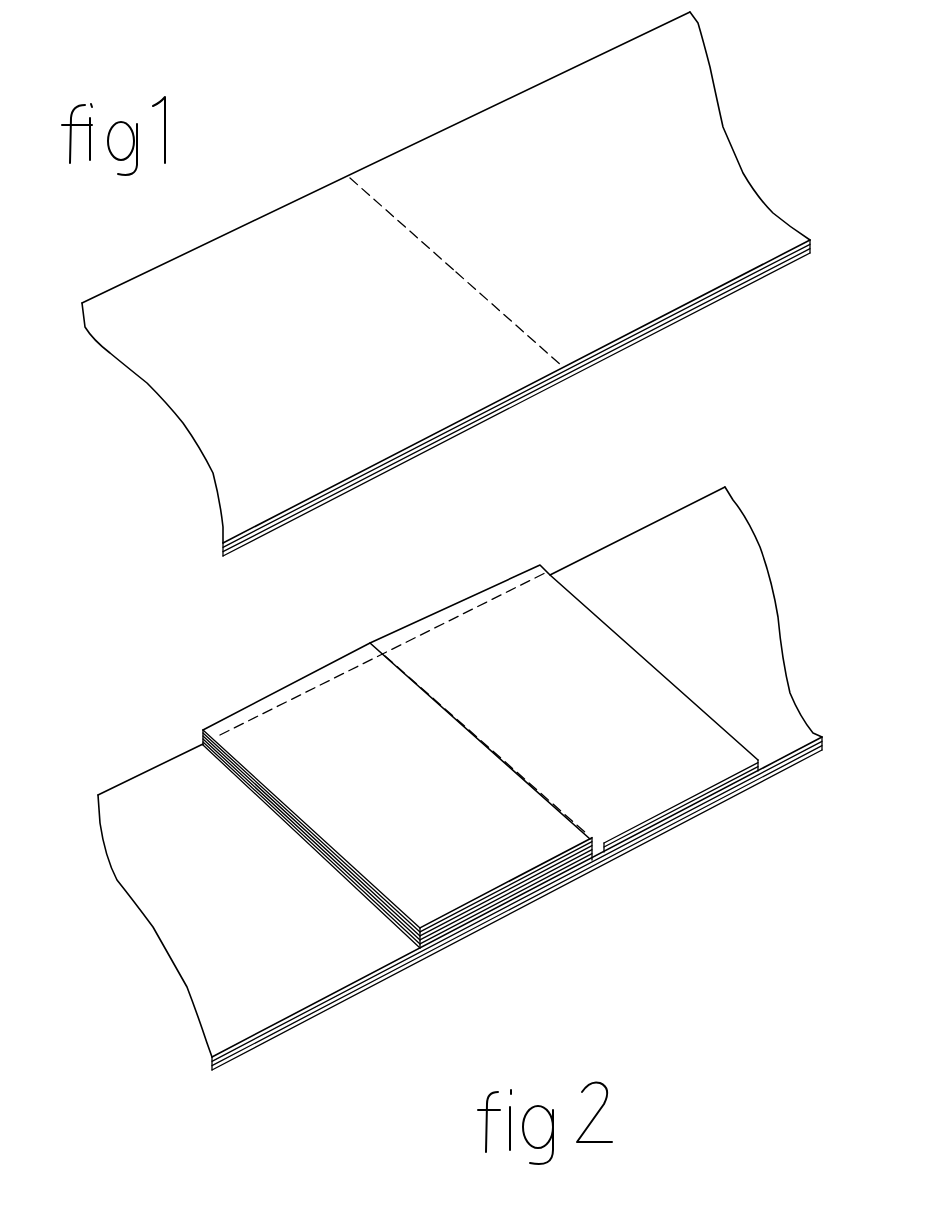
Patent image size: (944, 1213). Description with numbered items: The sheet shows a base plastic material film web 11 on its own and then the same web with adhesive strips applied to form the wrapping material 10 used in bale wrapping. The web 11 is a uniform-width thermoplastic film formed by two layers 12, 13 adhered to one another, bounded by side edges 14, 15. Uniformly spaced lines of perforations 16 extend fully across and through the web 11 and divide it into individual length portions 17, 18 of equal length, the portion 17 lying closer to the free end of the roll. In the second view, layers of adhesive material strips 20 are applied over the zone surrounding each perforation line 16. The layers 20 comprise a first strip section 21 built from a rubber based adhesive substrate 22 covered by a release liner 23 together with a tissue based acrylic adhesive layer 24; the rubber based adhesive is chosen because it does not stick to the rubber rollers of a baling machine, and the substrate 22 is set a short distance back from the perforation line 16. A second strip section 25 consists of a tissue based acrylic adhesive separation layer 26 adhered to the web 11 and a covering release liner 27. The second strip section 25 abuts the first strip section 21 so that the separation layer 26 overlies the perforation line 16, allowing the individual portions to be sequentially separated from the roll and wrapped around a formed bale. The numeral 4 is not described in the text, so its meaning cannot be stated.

In FIG. 2, the base layer 4 is at (160, 763).
In FIG. 1, the wrapping material 10 is at (243, 461).
In FIG. 2, the wrapping material 10 is at (204, 947).
In FIG. 1, the base plastic material film web 11 is at (342, 433).
In FIG. 2, the base plastic material film web 11 is at (655, 560).
In FIG. 1, the layer 12 is at (400, 462).
In FIG. 1, the layer 13 is at (452, 437).
In FIG. 1, the side edge 14 is at (380, 163).
In FIG. 1, the side edge 15 is at (623, 347).
In FIG. 2, the side edge 15 is at (347, 997).
In FIG. 1, the line of perforations 16 is at (500, 308).
In FIG. 2, the line of perforations 16 is at (408, 670).
In FIG. 1, the individual length portion 17 is at (268, 267).
In FIG. 2, the individual length portion 17 is at (282, 980).
In FIG. 1, the individual length portion 18 is at (521, 134).
In FIG. 2, the individual length portion 18 is at (766, 728).
In FIG. 2, the adhesive material strip layers 20 is at (529, 846).
In FIG. 2, the first strip section 21 is at (287, 730).
In FIG. 2, the rubber based adhesive substrate 22 is at (473, 933).
In FIG. 2, the release liner 23 is at (495, 920).
In FIG. 2, the tissue based acrylic adhesive layer 24 is at (442, 940).
In FIG. 2, the second strip section 25 is at (542, 600).
In FIG. 2, the separation layer 26 is at (742, 787).
In FIG. 2, the release liner 27 is at (687, 817).